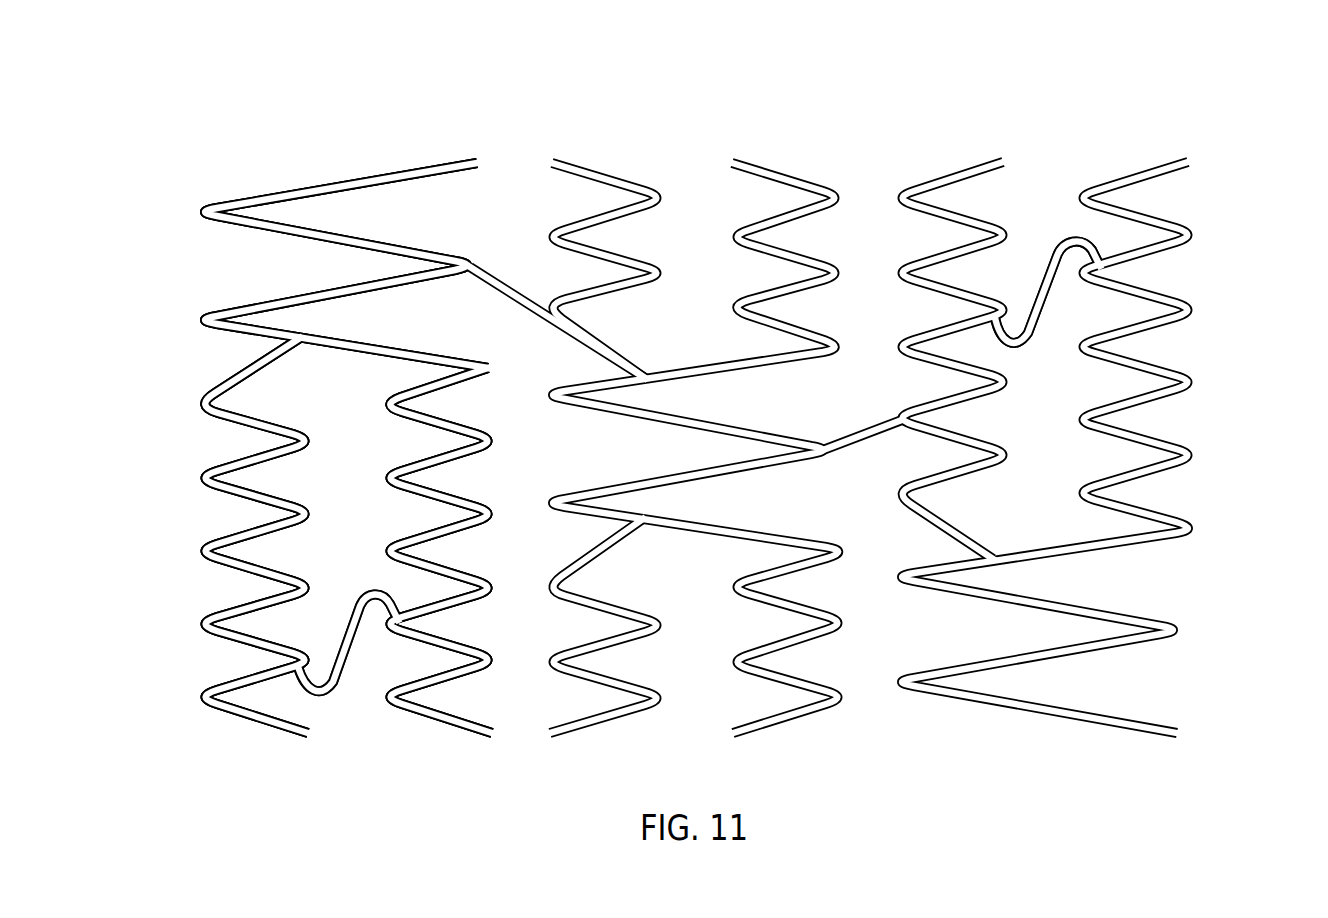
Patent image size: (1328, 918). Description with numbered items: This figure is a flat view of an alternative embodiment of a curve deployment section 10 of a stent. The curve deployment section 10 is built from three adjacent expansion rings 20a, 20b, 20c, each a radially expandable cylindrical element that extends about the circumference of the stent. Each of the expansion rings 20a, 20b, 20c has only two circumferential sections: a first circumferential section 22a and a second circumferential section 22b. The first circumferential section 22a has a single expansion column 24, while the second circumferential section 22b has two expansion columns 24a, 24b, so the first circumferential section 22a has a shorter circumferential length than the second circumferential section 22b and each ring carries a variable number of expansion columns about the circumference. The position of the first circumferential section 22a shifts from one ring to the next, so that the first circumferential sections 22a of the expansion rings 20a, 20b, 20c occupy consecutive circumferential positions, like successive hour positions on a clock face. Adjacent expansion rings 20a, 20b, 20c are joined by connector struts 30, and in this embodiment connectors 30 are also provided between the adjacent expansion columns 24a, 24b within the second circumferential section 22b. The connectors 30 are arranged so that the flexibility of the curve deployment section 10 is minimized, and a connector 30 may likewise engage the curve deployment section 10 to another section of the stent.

The curve deployment section 10 is at (711, 443).
The first expansion ring 20a is at (193, 112).
The second expansion ring 20b is at (848, 112).
The third expansion ring 20c is at (893, 112).
The first circumferential section 22a is at (182, 147).
The second circumferential section 22b is at (182, 373).
The expansion column 24 is at (314, 178).
The first expansion column 24a is at (250, 742).
The second expansion column 24b is at (435, 742).
The connector strut 30 is at (512, 283).